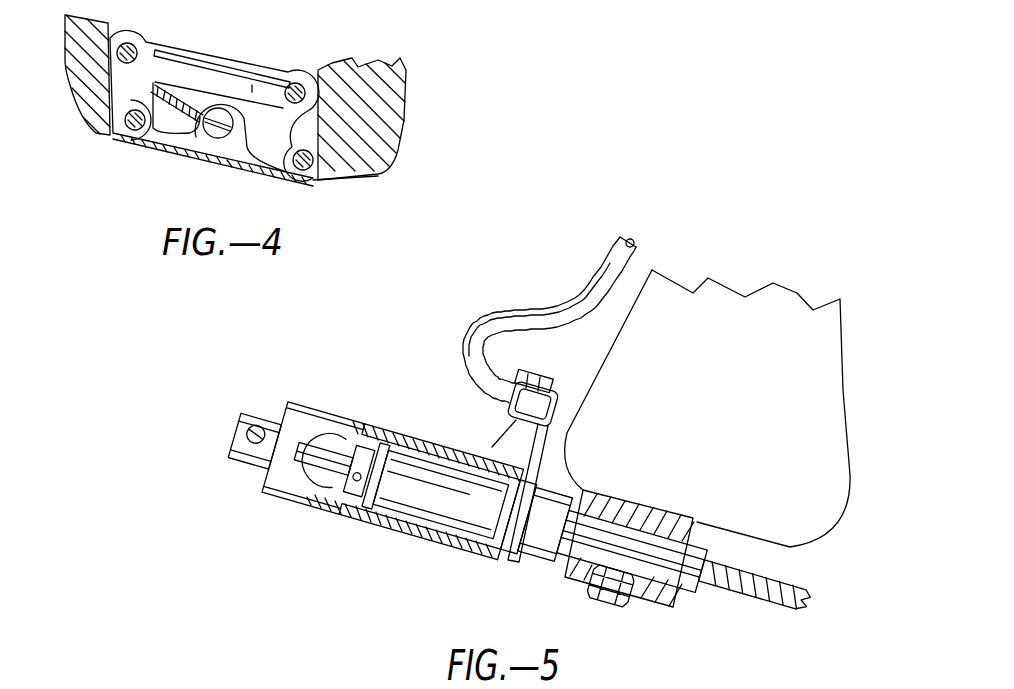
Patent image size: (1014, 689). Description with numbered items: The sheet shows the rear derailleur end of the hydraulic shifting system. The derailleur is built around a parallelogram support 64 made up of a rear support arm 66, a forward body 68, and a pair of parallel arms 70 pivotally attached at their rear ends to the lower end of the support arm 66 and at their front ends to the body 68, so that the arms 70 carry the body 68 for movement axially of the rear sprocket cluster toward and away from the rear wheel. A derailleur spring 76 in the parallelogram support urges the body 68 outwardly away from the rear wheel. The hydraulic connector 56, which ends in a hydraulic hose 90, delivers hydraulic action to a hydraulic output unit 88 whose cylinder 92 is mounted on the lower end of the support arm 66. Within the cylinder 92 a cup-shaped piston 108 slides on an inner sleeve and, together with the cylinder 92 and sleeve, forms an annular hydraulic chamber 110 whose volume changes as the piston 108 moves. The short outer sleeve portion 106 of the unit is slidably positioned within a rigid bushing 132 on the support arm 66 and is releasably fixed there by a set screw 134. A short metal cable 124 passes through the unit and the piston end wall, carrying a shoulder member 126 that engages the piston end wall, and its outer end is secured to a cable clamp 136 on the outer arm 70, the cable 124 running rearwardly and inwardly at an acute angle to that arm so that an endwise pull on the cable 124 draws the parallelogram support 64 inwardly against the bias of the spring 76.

In FIG. 5, the hydraulic connector 56 is at (620, 236).
In FIG. 4, the parallelogram support 64 is at (356, 175).
In FIG. 4, the rear support arm 66 is at (100, 117).
In FIG. 5, the rear support arm 66 is at (848, 378).
In FIG. 4, the forward body 68 is at (400, 110).
In FIG. 4, the parallel arms 70 is at (223, 63).
In FIG. 4, the derailleur spring 76 is at (267, 83).
In FIG. 5, the hydraulic output unit 88 is at (447, 442).
In FIG. 5, the hydraulic hose 90 is at (587, 280).
In FIG. 5, the cylinder 92 is at (320, 410).
In FIG. 5, the outer sleeve portion 106 is at (560, 537).
In FIG. 5, the piston 108 is at (412, 473).
In FIG. 5, the annular hydraulic chamber 110 is at (485, 543).
In FIG. 4, the cable 124 is at (190, 87).
In FIG. 5, the cable 124 is at (740, 593).
In FIG. 5, the shoulder member 126 is at (353, 493).
In FIG. 5, the rigid bushing 132 is at (658, 605).
In FIG. 5, the set screw 134 is at (597, 593).
In FIG. 4, the cable clamp 136 is at (225, 137).